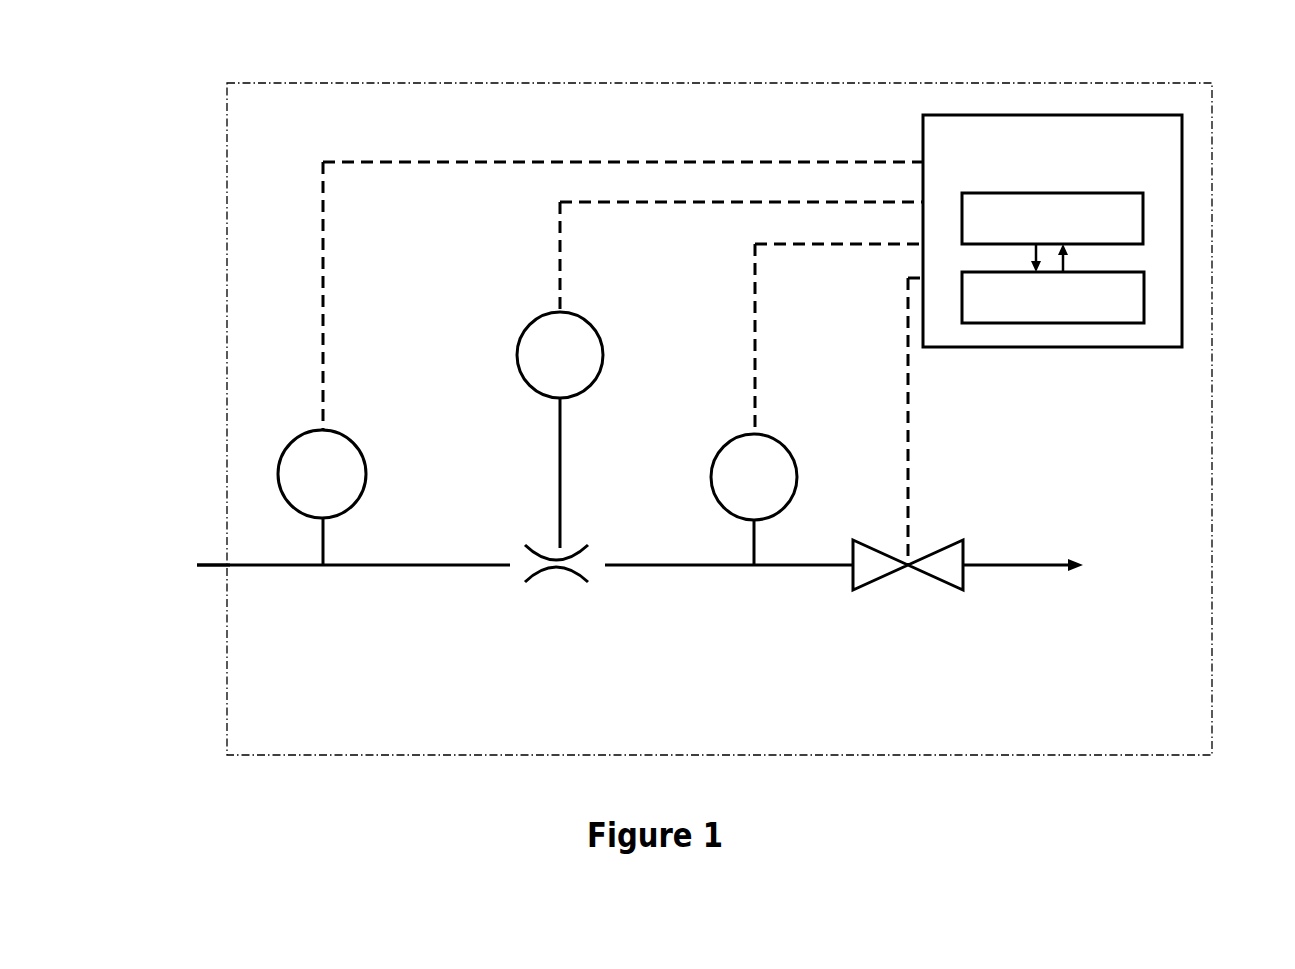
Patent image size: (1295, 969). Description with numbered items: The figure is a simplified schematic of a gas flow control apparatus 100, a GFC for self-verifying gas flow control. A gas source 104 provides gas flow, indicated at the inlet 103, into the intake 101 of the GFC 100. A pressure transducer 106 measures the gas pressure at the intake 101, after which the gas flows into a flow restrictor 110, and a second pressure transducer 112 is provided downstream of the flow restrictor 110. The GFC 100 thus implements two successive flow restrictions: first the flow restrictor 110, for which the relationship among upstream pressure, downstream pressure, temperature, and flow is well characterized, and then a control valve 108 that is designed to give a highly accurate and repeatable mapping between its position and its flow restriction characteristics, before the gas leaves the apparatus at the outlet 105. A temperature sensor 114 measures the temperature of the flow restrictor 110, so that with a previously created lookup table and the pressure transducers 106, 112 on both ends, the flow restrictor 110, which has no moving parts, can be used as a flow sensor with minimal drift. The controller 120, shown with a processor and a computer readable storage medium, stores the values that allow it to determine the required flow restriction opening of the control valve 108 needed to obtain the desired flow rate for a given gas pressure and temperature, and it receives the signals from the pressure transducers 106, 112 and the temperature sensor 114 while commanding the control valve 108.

The gas flow control apparatus 100 is at (265, 128).
The intake 101 is at (227, 572).
The gas inlet 103 is at (196, 543).
The gas source 104 is at (128, 588).
The outlet to process chamber 105 is at (1068, 540).
The pressure transducer 106 is at (576, 445).
The control valve 108 is at (908, 503).
The flow restrictor 110 is at (558, 634).
The second pressure transducer 112 is at (792, 485).
The temperature sensor 114 is at (522, 327).
The controller 120 is at (1112, 352).